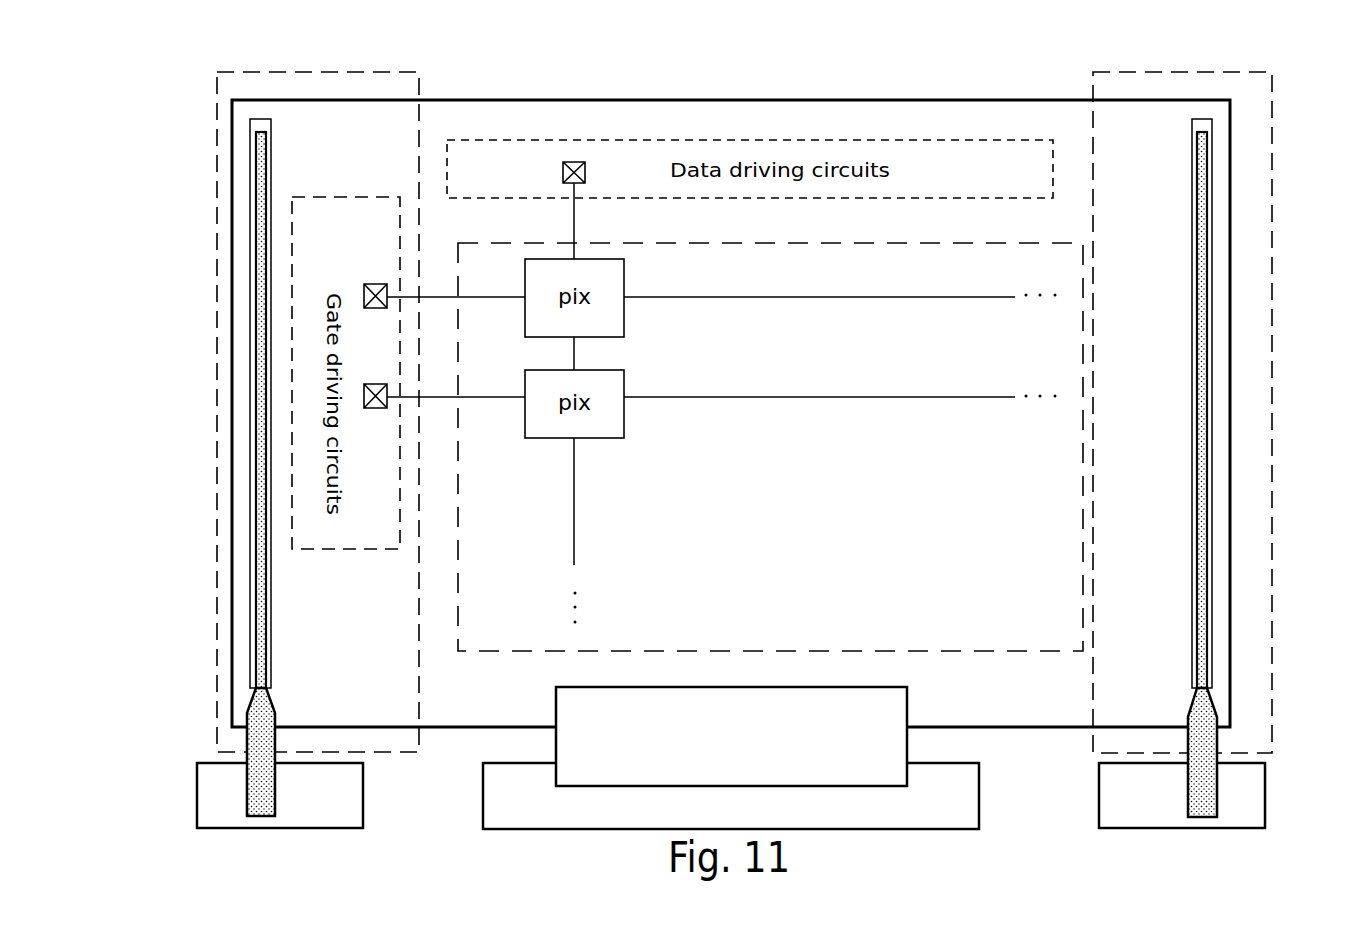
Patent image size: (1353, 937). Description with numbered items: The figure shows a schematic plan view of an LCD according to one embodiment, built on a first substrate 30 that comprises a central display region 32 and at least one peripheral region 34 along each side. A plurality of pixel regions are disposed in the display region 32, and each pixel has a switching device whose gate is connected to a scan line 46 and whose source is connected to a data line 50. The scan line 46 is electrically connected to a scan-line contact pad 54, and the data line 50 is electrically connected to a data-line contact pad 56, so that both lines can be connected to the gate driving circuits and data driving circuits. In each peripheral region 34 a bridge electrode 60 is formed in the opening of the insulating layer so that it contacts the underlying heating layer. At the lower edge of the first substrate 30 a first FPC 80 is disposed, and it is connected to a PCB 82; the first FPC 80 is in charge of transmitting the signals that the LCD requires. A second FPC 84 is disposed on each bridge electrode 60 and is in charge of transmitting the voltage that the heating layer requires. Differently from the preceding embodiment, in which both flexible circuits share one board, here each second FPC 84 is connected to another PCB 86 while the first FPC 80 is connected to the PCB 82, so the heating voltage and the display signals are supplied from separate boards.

The first substrate 30 is at (975, 57).
The display region 32 is at (1005, 243).
The peripheral region 34 is at (255, 72).
The scan line 46 is at (754, 397).
The data line 50 is at (574, 535).
The scan-line contact pad 54 is at (376, 286).
The data-line contact pad 56 is at (574, 162).
The bridge electrode 60 is at (250, 613).
The first FPC 80 is at (731, 736).
The PCB 82 is at (731, 796).
The second FPC 84 is at (262, 742).
The another PCB 86 is at (222, 790).